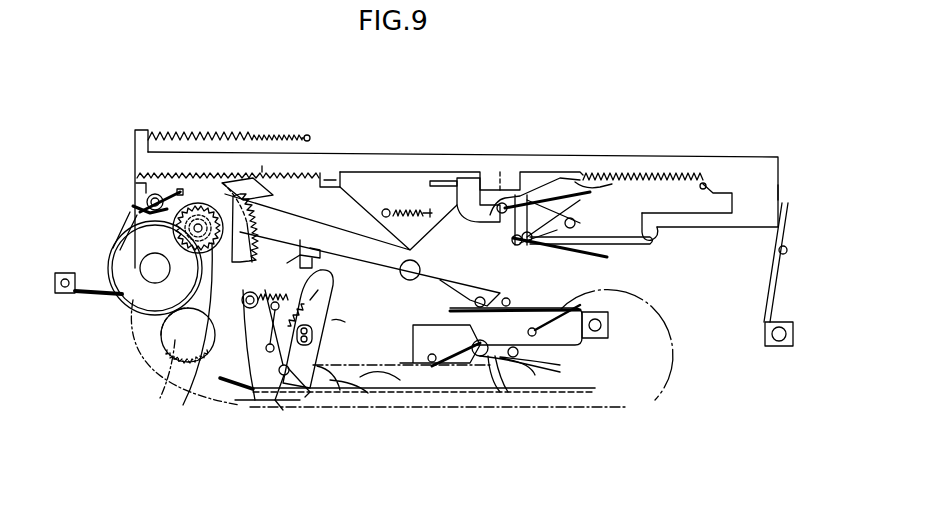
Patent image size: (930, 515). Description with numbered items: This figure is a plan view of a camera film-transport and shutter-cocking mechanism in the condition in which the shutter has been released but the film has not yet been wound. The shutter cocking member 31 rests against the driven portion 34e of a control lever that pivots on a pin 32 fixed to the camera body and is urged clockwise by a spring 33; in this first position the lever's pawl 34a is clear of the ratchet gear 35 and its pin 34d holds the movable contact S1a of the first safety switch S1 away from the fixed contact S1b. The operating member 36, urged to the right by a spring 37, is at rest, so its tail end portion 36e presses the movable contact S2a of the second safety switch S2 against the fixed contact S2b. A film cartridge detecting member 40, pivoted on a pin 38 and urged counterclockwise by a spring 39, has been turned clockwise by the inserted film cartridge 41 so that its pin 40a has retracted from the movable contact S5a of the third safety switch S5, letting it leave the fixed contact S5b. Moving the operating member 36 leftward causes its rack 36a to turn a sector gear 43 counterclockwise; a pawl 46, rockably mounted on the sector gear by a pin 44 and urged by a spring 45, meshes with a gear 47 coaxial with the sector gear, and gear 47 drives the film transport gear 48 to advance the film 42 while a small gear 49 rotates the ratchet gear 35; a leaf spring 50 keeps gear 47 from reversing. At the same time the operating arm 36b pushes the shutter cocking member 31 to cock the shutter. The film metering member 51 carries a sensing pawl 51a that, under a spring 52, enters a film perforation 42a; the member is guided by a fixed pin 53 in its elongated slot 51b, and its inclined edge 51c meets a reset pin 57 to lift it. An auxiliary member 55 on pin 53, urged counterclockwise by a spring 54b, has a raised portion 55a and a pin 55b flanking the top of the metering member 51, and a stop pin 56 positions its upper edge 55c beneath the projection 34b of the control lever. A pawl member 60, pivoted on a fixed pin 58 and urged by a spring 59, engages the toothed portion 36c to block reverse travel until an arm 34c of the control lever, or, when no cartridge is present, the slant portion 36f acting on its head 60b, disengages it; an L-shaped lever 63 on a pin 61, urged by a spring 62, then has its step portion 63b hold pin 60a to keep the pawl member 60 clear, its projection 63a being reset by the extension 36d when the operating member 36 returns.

The shutter cocking member 31 is at (392, 153).
The pin 32 is at (430, 258).
The spring 33 is at (392, 212).
The pawl 34a is at (322, 188).
The projection 34b is at (318, 245).
The arm 34c is at (445, 218).
The pin 34d is at (478, 300).
The driven portion 34e is at (462, 178).
The ratchet gear 35 is at (183, 355).
The operating member 36 is at (362, 153).
The rack 36a is at (272, 170).
The operating arm 36b is at (495, 170).
The toothed portion 36c is at (674, 172).
The extension 36d is at (656, 240).
The tail end portion 36e is at (780, 193).
The slant portion 36f is at (708, 183).
The spring 37 is at (222, 136).
The pin 38 is at (505, 395).
The spring 39 is at (444, 359).
The film cartridge detecting member 40 is at (525, 395).
The pin 40a is at (570, 395).
The film cartridge 41 is at (488, 396).
The film 42 is at (442, 395).
The film perforation 42a is at (310, 395).
The sector gear 43 is at (137, 187).
The pin 44 is at (146, 199).
The spring 45 is at (132, 209).
The pawl 46 is at (112, 243).
The gear 47 is at (133, 300).
The film transport gear 48 is at (150, 352).
The small gear 49 is at (250, 208).
The leaf spring 50 is at (88, 299).
The film metering member 51 is at (372, 396).
The sensing pawl 51a is at (362, 395).
The elongated slot 51b is at (377, 354).
The inclined edge 51c is at (283, 400).
The spring 52 is at (258, 350).
The fixed pin 53 is at (312, 343).
The spring 54b is at (266, 290).
The auxiliary member 55 is at (334, 292).
The raised portion 55a is at (354, 320).
The pin 55b is at (261, 230).
The upper edge 55c is at (325, 257).
The stop pin 56 is at (268, 344).
The reset pin 57 is at (250, 400).
The fixed pin 58 is at (568, 218).
The spring 59 is at (587, 154).
The pawl member 60 is at (550, 185).
The pin 60a is at (505, 202).
The head of pawl member 60b is at (612, 186).
The pin 61 is at (486, 281).
The spring 62 is at (583, 256).
The L-shaped lever 63 is at (632, 246).
The projection 63a is at (655, 244).
The step portion 63b is at (510, 246).
The first safety switch S1 is at (516, 299).
The movable contact S1a is at (450, 311).
The fixed contact S1b is at (507, 297).
The second safety switch S2 is at (786, 238).
The movable contact S2a is at (778, 256).
The fixed contact S2b is at (784, 255).
The third safety switch S5 is at (566, 340).
The movable contact S5a is at (527, 358).
The fixed contact S5b is at (554, 322).